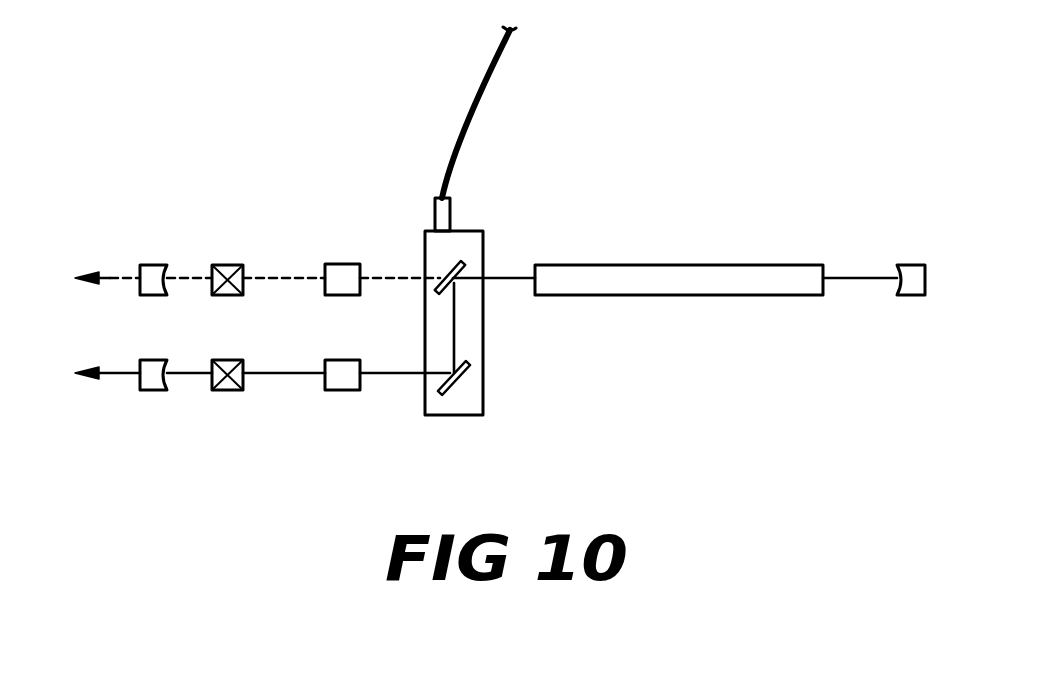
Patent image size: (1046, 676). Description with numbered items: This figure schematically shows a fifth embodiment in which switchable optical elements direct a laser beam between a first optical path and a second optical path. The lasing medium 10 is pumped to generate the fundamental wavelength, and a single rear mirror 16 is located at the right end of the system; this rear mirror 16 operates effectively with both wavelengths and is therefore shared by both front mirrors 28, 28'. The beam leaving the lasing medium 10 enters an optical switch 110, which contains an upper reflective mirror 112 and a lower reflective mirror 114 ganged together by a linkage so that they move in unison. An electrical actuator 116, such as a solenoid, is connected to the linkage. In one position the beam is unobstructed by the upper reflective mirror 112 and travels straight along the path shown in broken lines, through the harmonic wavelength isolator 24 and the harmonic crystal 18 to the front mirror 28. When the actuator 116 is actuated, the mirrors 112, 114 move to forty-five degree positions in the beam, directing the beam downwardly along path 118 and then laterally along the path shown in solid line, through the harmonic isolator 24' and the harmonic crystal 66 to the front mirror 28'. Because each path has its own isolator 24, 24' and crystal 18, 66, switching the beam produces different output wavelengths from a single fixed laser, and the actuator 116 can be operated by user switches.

The lasing medium 10 is at (637, 265).
The rear mirror 16 is at (912, 265).
The harmonic crystal 18 is at (227, 265).
The harmonic wavelength isolator 24 is at (326, 252).
The front mirror 28 is at (135, 252).
The front mirror 28' is at (182, 403).
The harmonic crystal 66 is at (230, 390).
The harmonic isolator 24' is at (362, 403).
The optical switch 110 is at (488, 218).
The upper reflective mirror 112 is at (452, 267).
The lower reflective mirror 114 is at (452, 390).
The electrical actuator 116 is at (435, 215).
The path 118 is at (455, 305).